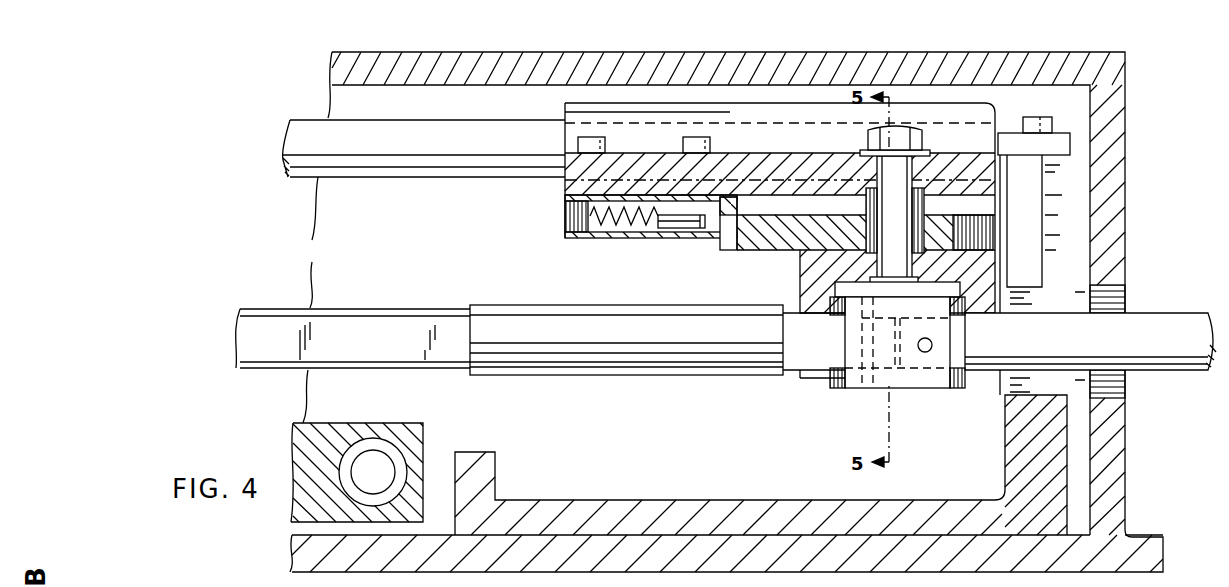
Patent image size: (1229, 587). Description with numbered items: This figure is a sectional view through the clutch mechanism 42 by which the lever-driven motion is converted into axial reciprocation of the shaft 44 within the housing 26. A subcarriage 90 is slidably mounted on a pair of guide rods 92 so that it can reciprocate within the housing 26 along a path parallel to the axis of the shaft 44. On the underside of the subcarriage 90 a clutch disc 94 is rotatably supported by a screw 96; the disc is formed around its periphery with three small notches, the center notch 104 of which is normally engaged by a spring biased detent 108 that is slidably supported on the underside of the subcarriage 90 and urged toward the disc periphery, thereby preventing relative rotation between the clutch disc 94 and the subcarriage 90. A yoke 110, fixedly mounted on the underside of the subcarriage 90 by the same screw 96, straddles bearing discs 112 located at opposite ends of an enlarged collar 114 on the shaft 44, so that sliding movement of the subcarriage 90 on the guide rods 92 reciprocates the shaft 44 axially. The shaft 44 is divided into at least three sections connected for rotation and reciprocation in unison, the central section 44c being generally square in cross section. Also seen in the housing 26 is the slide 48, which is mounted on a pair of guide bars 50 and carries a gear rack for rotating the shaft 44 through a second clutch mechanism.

The housing 26 is at (1118, 152).
The clutch mechanism 42 is at (553, 115).
The shaft 44 is at (1145, 336).
The central section of shaft 44c is at (412, 318).
The slide 48 is at (413, 430).
The guide bars 50 is at (383, 470).
The subcarriage 90 is at (775, 158).
The guide rods 92 is at (458, 175).
The clutch disc 94 is at (777, 246).
The screw 96 is at (913, 167).
The center notch 104 is at (730, 250).
The spring biased detent 108 is at (672, 236).
The yoke 110 is at (800, 283).
The bearing discs 112 is at (840, 388).
The enlarged collar 114 is at (915, 385).